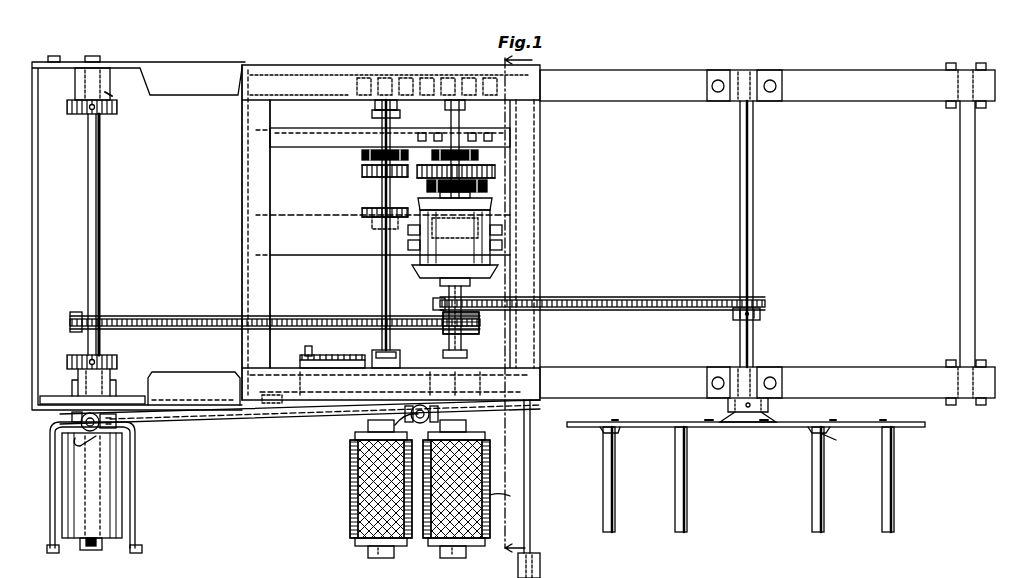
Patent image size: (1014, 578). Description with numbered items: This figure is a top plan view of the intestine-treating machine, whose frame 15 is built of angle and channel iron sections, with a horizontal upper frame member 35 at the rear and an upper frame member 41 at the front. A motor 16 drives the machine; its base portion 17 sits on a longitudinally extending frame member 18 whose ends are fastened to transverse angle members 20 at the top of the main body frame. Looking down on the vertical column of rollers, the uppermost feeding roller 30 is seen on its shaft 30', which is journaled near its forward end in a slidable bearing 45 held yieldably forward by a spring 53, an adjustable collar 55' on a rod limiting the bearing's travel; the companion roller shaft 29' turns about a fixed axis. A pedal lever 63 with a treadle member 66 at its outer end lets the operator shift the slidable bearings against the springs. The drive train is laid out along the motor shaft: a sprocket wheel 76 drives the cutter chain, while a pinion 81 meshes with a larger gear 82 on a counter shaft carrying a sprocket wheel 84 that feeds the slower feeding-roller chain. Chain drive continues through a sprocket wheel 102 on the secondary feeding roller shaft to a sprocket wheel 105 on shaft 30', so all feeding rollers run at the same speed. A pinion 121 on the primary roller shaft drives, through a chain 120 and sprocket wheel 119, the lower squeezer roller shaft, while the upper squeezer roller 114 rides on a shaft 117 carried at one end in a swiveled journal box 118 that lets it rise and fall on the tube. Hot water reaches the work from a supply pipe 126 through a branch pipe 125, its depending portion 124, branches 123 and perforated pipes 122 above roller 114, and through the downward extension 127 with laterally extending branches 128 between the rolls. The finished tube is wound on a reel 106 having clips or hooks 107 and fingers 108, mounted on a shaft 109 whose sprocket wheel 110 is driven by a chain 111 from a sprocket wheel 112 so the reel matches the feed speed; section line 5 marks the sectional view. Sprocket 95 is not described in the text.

The section line 5- 5 is at (509, 306).
The frame 15 is at (638, 97).
The motor 16 is at (546, 231).
The base portion 17 is at (388, 257).
The longitudinally extending frame member 18 is at (330, 240).
The transverse angle members 20 is at (244, 182).
The shaft 29' is at (473, 318).
The feeding roller 30 is at (401, 489).
The shaft 30' is at (376, 196).
The upper frame member 35 is at (322, 82).
The upper frame member 41 is at (266, 403).
The bearings 45 is at (396, 362).
The spring 53 is at (338, 358).
The adjustable collar 55' is at (308, 345).
The pedal lever 63 is at (530, 470).
The treadle member 66 is at (540, 562).
The sprocket wheel 76 is at (478, 158).
The pinion 81 is at (440, 190).
The gear 82 is at (495, 178).
The sprocket wheel 84 is at (487, 186).
The gear 95 is at (364, 172).
The sprocket wheel 102 is at (362, 160).
The sprocket wheel 105 is at (364, 212).
The reel 106 is at (656, 427).
The clips or hooks 107 is at (830, 433).
The fingers 108 is at (612, 498).
The shaft 109 is at (754, 236).
The sprocket wheel 110 is at (762, 300).
The chain 111 is at (642, 296).
The sprocket wheel 112 is at (436, 300).
The squeezer roller 114 is at (106, 497).
The shaft 117 is at (100, 202).
The journal box 118 is at (112, 97).
The sprocket wheel 119 is at (72, 316).
The chain 120 is at (186, 318).
The pinion 121 is at (480, 330).
The perforated pipes 122 is at (53, 478).
The branches 123 is at (70, 426).
The depending portion 124 is at (78, 446).
The branch pipe 125 is at (206, 418).
The supply pipe 126 is at (395, 426).
The downward extension 127 is at (510, 496).
The laterally extending branches 128 is at (440, 412).